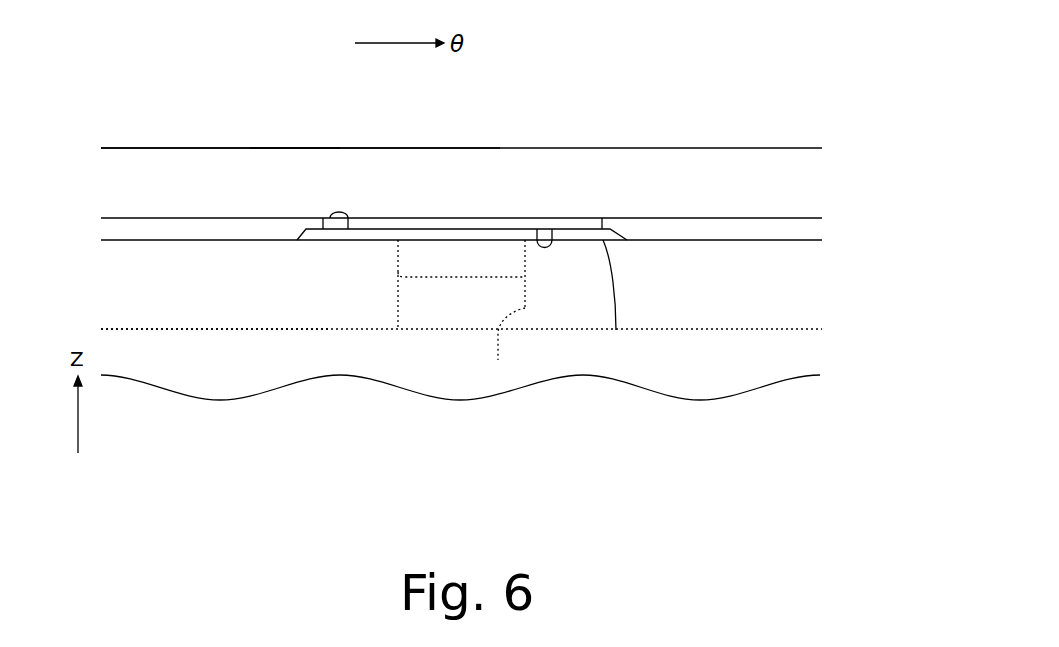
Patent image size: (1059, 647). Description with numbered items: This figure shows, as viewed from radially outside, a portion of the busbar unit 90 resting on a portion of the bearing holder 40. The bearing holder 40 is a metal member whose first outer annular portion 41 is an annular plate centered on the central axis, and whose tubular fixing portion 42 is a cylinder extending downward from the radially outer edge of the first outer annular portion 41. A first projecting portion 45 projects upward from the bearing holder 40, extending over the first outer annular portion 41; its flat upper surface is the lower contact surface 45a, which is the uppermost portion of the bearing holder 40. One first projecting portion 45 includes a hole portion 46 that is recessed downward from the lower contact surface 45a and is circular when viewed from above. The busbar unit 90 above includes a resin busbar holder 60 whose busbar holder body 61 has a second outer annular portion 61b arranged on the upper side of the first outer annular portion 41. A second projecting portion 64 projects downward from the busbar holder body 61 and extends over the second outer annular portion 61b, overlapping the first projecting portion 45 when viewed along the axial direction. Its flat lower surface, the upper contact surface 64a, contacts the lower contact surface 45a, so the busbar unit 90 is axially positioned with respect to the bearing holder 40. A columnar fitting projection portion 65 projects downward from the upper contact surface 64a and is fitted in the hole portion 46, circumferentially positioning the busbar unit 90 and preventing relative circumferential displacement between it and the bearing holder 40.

The busbar unit 90 is at (841, 88).
The busbar holder 60 is at (747, 140).
The busbar holder body 61 is at (165, 146).
The second outer annular portion 61b is at (290, 162).
The second projecting portion 64 is at (580, 222).
The upper contact surface 64a is at (552, 229).
The fitting projection portion 65 is at (425, 263).
The hole portion 46 is at (498, 360).
The first projecting portion 45 is at (616, 330).
The lower contact surface 45a is at (330, 229).
The bearing holder 40 is at (745, 402).
The first outer annular portion 41 is at (802, 282).
The tubular fixing portion 42 is at (190, 306).